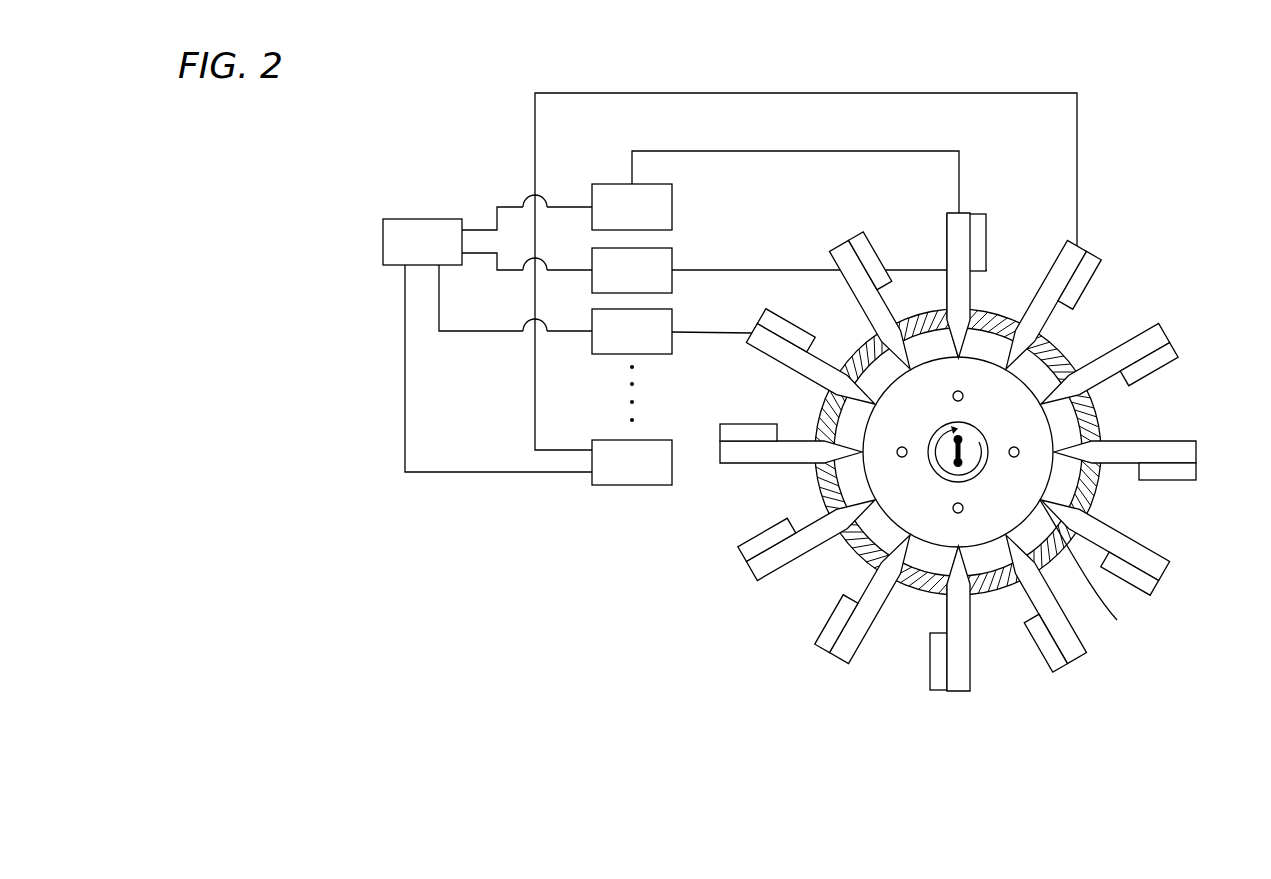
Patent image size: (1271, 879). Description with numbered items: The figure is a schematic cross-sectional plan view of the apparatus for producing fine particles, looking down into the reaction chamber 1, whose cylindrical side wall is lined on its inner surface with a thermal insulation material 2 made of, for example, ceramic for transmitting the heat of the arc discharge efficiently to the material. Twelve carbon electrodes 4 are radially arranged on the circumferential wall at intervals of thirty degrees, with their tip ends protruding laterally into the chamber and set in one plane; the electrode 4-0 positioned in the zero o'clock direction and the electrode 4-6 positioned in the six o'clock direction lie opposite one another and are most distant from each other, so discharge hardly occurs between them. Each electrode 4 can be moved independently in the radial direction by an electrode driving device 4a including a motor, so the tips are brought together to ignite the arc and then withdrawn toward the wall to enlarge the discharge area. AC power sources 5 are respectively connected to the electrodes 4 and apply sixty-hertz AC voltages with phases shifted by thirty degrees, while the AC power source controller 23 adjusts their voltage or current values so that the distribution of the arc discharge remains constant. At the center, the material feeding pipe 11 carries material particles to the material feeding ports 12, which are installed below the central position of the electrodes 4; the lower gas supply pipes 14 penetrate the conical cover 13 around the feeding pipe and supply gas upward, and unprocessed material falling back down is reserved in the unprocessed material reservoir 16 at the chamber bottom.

The reaction chamber 1 is at (1058, 340).
The thermal insulation material 2 is at (940, 573).
The electrode 4 is at (846, 284).
The electrode driving device 4a is at (862, 232).
The electrode positioned in a direction of 0 o'clock 4-0 is at (970, 213).
The electrode positioned in a direction of 6 o'clock 4-6 is at (963, 692).
The AC power source 5 is at (667, 252).
The material feeding pipe 11 is at (980, 443).
The material feeding port 12 is at (1022, 507).
The cover 13 is at (1098, 570).
The gas supply pipe 14 is at (1135, 490).
The unprocessed material reservoir 16 is at (963, 467).
The AC power source controller 23 is at (403, 219).